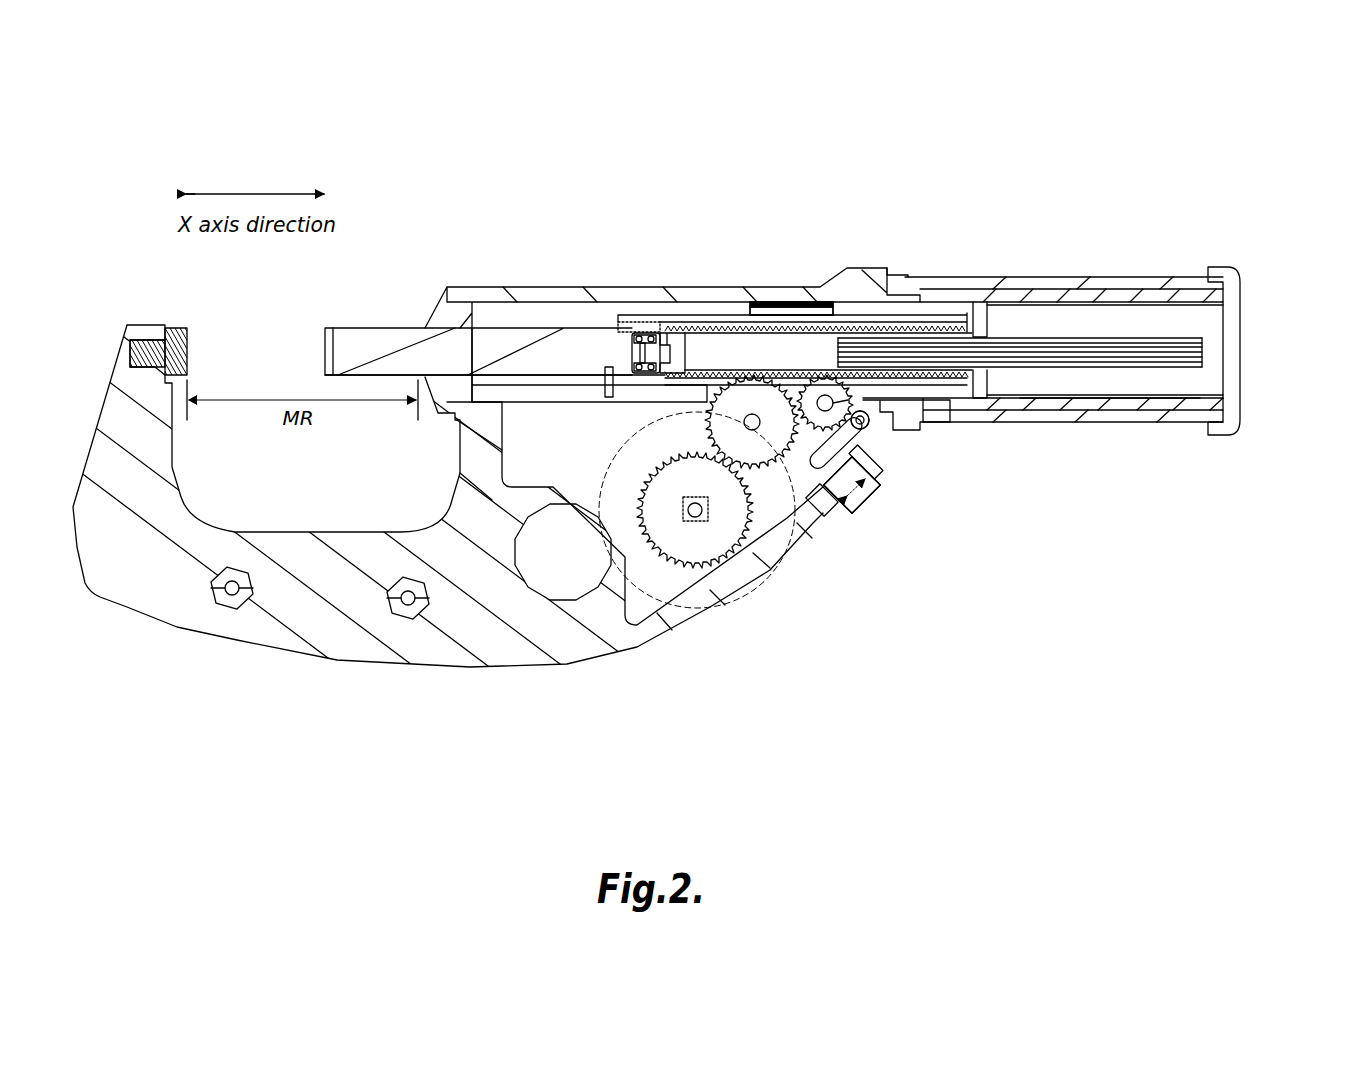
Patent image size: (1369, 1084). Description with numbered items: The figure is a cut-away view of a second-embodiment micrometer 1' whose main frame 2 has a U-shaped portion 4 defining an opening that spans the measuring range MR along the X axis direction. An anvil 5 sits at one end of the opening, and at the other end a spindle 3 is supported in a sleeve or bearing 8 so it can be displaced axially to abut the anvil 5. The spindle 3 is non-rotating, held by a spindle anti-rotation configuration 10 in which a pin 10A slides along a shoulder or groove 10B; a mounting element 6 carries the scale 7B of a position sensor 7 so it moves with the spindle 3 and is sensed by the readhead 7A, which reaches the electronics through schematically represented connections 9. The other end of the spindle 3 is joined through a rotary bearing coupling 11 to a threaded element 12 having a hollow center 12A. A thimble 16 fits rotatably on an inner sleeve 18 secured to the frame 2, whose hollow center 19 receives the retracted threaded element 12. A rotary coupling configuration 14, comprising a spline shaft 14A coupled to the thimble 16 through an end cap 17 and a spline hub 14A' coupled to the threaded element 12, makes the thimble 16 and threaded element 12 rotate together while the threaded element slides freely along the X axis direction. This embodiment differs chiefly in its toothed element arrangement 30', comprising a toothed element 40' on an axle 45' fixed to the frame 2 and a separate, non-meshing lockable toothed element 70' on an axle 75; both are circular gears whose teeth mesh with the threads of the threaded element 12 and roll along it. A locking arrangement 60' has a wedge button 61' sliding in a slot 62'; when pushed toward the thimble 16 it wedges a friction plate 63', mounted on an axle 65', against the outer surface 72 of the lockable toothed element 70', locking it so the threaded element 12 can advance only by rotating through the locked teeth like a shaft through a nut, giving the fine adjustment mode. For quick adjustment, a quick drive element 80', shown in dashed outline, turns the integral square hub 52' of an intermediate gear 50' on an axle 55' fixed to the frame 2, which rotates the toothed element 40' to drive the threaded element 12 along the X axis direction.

The micrometer 1' is at (881, 114).
The main frame 2 is at (545, 680).
The spindle 3 is at (340, 328).
The U-shaped portion 4 is at (353, 640).
The anvil 5 is at (177, 328).
The mounting element 6 is at (605, 367).
The position sensor 7 is at (772, 256).
The readhead 7A is at (790, 313).
The scale 7B is at (800, 305).
The sleeve or bearing 8 is at (437, 313).
The connections 9 is at (747, 305).
The spindle anti-rotation configuration 10 is at (483, 293).
The pin 10A is at (553, 332).
The shoulder or groove 10B is at (547, 397).
The rotary bearing coupling 11 is at (662, 352).
The threaded element 12 is at (935, 415).
The hollow center 12A is at (805, 350).
The rotary coupling configuration 14 is at (1020, 432).
The spline shaft 14A is at (1020, 422).
The spline hub 14A' is at (1020, 444).
The thimble 16 is at (975, 280).
The end cap 17 is at (1238, 283).
The inner sleeve 18 is at (1063, 403).
The hollow center 19 is at (1042, 313).
The toothed element arrangement 30' is at (893, 548).
The toothed element 40' is at (846, 554).
The axle 45' is at (752, 506).
The intermediate gear 50' is at (695, 572).
The square hub 52' is at (704, 583).
The axle 55' is at (693, 601).
The locking arrangement 60' is at (894, 522).
The wedge button 61' is at (863, 504).
The slot 62' is at (837, 517).
The friction plate 63' is at (892, 498).
The axle 65' is at (907, 515).
The lockable toothed element 70' is at (842, 520).
The outer surface 72 is at (868, 418).
The axle 75 is at (866, 432).
The quick drive element 80' is at (697, 588).